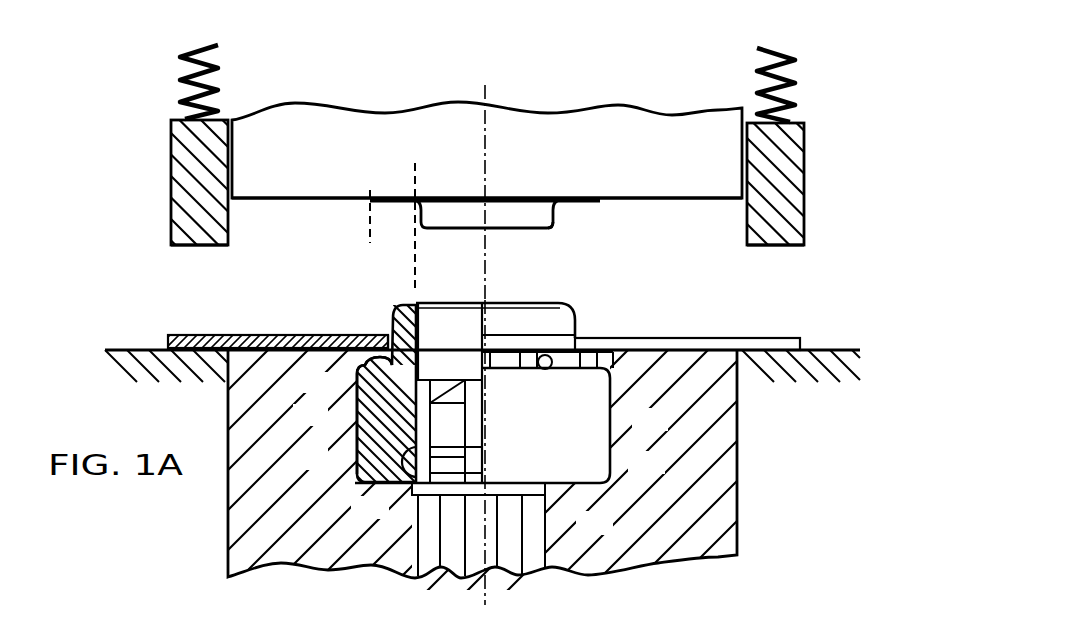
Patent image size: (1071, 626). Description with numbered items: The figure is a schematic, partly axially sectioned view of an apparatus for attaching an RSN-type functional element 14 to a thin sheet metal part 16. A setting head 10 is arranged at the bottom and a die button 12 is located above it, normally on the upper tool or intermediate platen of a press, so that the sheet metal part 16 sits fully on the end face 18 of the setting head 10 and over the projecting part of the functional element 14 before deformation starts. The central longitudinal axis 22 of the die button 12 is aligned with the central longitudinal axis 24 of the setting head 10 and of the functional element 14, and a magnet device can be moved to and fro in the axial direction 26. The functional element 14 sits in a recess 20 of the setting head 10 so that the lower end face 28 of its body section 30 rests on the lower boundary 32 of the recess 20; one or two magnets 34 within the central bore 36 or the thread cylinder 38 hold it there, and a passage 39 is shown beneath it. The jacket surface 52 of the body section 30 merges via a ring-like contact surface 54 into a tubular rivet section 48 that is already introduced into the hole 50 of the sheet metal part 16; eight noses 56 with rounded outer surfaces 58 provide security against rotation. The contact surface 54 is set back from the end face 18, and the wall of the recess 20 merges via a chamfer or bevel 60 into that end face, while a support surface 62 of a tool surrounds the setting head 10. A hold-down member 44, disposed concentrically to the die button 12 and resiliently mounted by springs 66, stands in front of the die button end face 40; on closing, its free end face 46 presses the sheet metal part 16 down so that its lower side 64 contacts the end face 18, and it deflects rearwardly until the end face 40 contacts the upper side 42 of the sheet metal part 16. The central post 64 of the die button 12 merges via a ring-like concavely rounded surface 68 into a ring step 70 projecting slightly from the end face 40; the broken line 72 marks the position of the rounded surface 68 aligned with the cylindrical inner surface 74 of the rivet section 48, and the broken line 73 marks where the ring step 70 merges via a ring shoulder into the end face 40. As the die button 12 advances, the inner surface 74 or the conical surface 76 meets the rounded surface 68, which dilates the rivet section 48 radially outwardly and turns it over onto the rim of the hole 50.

The setting head 10 is at (742, 470).
The die button 12 is at (752, 168).
The functional element 14 is at (388, 318).
The sheet metal part 16 is at (792, 340).
The end face of the setting head 18 is at (270, 340).
The recess of the setting head 20 is at (362, 452).
The central longitudinal axis of the die button 22 is at (490, 92).
The central longitudinal axis of the setting head and functional element 24 is at (494, 398).
The axial direction of the setting head 26 is at (490, 588).
The lower end face of the body section 28 is at (562, 490).
The body section 30 is at (612, 420).
The lower boundary of the recess 32 is at (605, 480).
The magnet 34 is at (450, 425).
The central bore 36 is at (440, 380).
The thread cylinder 38 is at (404, 478).
The passage 39 is at (452, 562).
The end face of the die button 40 is at (680, 200).
The upper side of the sheet metal part 42 is at (705, 338).
The hold-down member 44 is at (188, 172).
The free end face of the hold-down member 46 is at (193, 247).
The tubular rivet section 48 is at (402, 306).
The hole 50 is at (385, 345).
The jacket surface of the body section 52 is at (357, 420).
The ring-like contact surface 54 is at (368, 364).
The noses providing security against rotation 56 is at (588, 340).
The rounded outer surface of the noses 58 is at (553, 368).
The chamfer or bevel 60 is at (630, 352).
The support surface 62 is at (152, 346).
The central post of the die button 64 is at (525, 232).
The springs 66 is at (214, 70).
The ring-like concavely rounded surface 68 is at (565, 208).
The ring step 70 is at (600, 205).
The broken line 72 is at (415, 165).
The broken line 73 is at (370, 215).
The cylindrical inner surface of the tubular rivet section 74 is at (460, 295).
The conical surface 76 is at (487, 302).